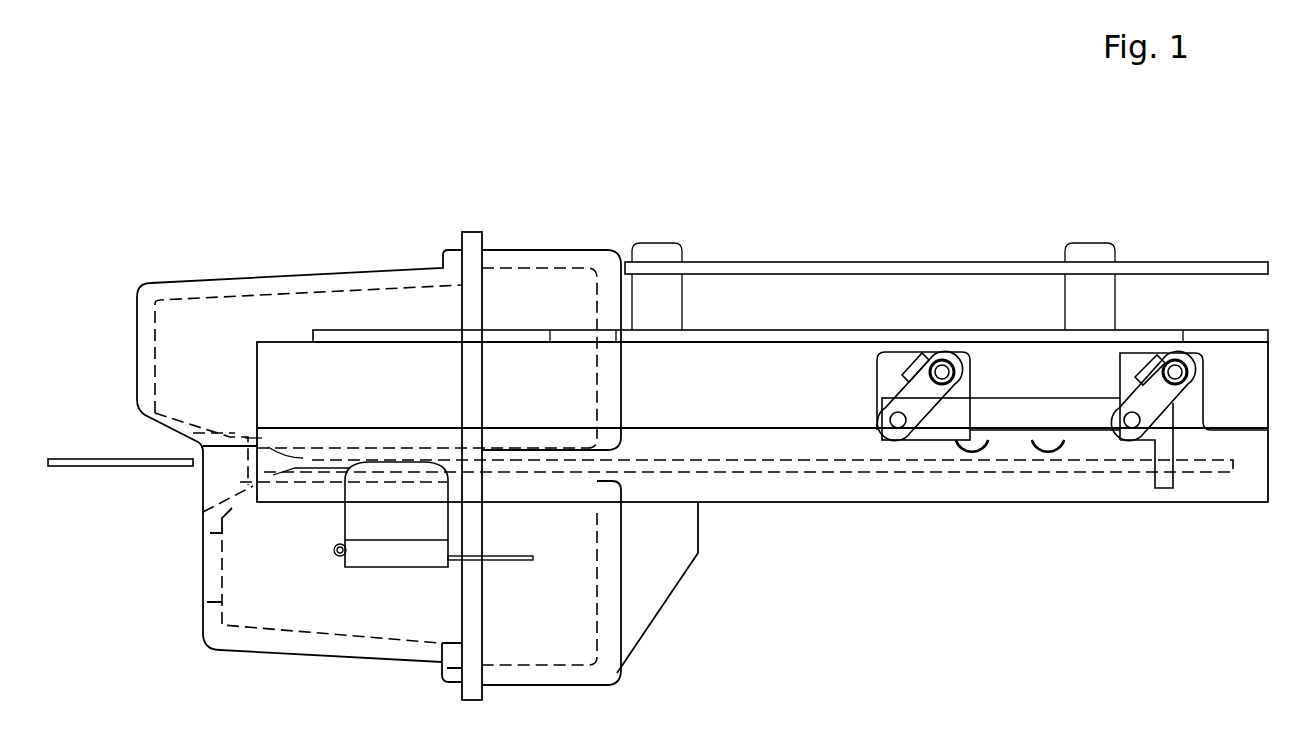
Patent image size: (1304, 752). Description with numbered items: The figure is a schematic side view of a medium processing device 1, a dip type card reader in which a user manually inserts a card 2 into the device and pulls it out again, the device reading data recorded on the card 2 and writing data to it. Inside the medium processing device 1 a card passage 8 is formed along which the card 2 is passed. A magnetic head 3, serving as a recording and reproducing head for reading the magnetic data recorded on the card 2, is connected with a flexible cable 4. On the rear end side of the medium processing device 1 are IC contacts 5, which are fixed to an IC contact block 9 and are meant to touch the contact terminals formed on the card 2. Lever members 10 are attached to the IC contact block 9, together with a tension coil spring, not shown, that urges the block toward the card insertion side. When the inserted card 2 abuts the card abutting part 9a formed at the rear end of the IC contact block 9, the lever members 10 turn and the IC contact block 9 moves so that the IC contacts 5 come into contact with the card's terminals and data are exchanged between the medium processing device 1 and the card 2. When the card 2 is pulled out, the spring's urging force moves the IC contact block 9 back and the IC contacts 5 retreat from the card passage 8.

The medium processing device 1 is at (957, 178).
The card 2 is at (128, 467).
The magnetic head 3 is at (345, 522).
The flexible cable 4 is at (508, 562).
The IC contacts 5 is at (975, 464).
The card passage 8 is at (818, 470).
The IC contact block 9 is at (1072, 449).
The card abutting part 9a is at (1163, 493).
The lever members 10 is at (897, 400).